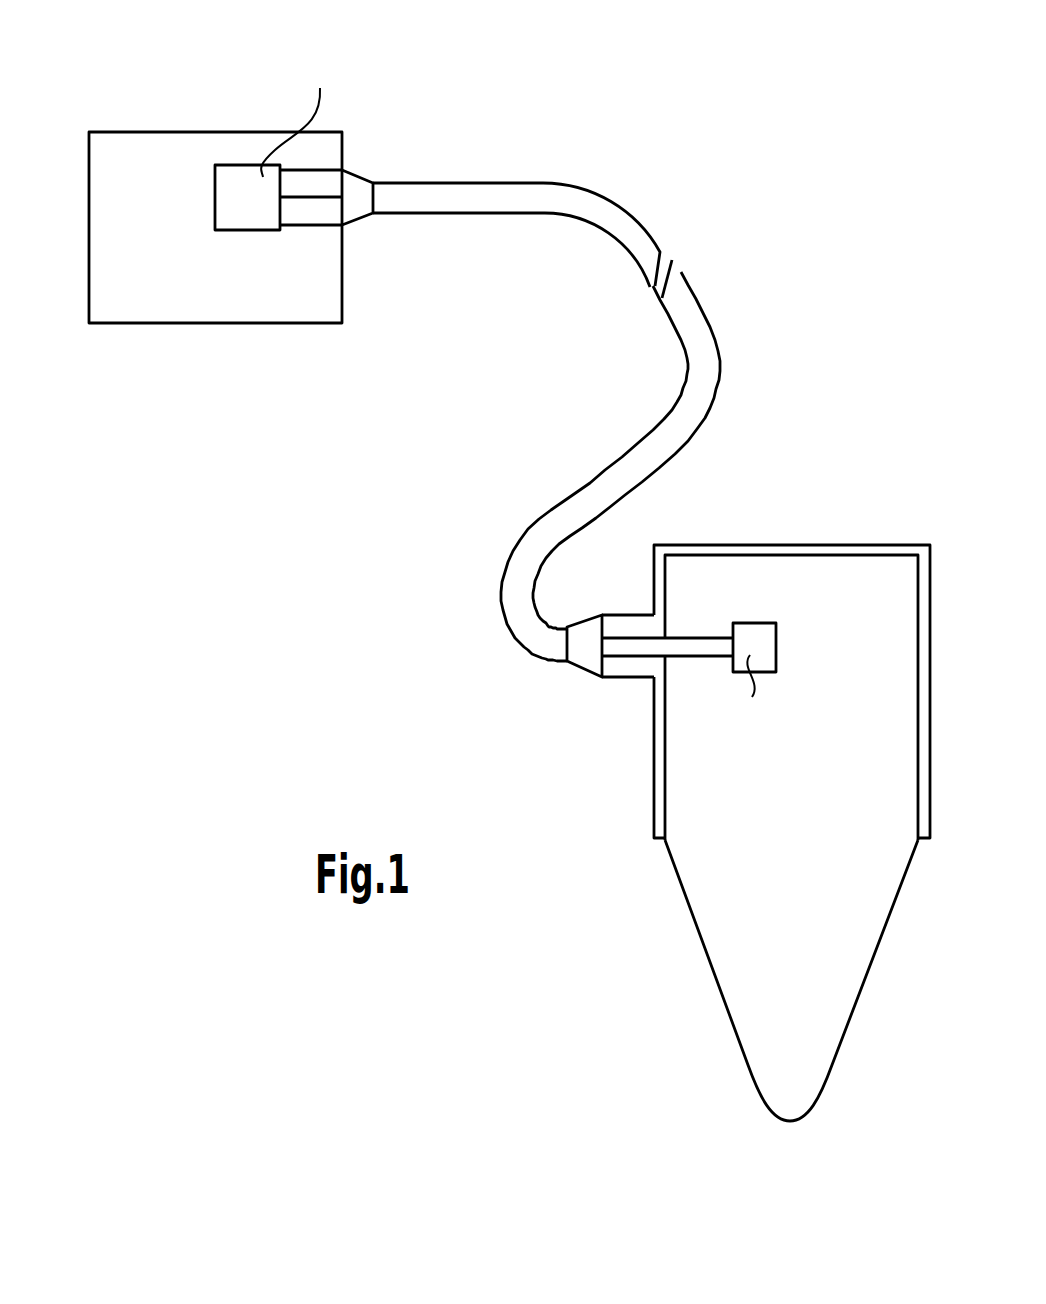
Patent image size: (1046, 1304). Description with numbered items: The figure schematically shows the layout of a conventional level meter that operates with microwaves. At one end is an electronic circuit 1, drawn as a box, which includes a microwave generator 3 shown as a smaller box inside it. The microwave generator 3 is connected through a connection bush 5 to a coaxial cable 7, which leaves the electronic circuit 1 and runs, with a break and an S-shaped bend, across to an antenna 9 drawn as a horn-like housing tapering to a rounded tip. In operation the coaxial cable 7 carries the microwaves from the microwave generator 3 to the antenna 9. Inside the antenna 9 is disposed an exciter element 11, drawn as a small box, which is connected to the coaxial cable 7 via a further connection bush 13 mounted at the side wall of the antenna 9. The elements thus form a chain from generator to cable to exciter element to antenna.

The electronic circuit 1 is at (149, 302).
The microwave generator 3 is at (253, 173).
The connection bush 5 is at (353, 212).
The coaxial cable 7 is at (482, 208).
The antenna 9 is at (868, 532).
The exciter element 11 is at (756, 634).
The further connection bush 13 is at (638, 670).